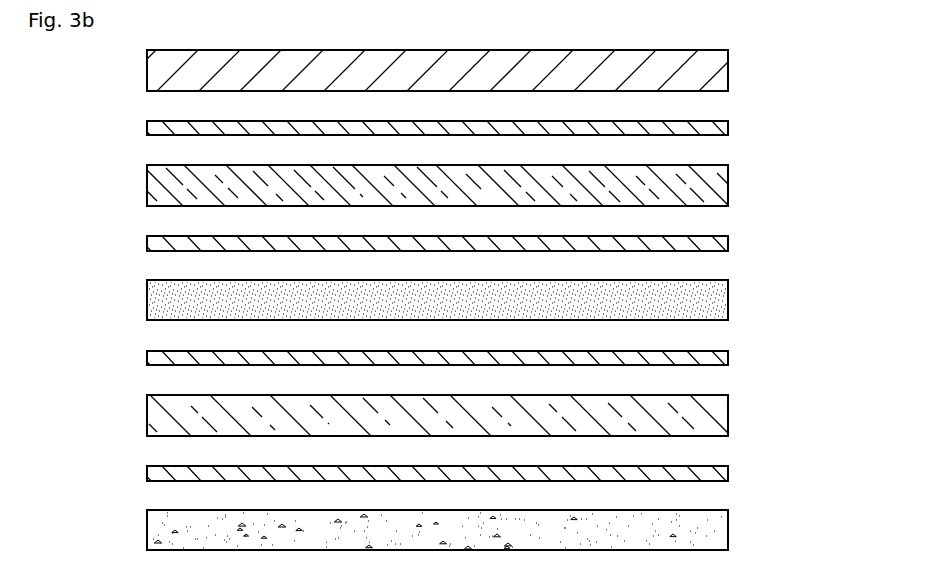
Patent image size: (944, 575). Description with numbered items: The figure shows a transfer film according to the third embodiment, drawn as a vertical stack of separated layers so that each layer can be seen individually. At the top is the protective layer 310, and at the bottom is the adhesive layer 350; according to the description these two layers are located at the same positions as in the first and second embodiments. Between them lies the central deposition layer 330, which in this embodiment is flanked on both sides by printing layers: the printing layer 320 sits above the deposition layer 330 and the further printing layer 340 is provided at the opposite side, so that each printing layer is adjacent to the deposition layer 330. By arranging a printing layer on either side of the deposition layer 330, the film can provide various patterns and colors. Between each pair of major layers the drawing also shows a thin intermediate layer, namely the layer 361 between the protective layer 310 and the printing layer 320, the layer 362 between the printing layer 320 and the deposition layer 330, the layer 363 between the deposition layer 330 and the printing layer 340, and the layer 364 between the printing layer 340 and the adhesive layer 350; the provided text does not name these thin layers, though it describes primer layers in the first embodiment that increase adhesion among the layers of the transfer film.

The protective layer 310 is at (147, 67).
The printing layer 320 is at (147, 183).
The deposition layer 330 is at (147, 297).
The printing layer 340 is at (147, 412).
The adhesive layer 350 is at (147, 527).
The first adhesive layer 361 is at (730, 127).
The second adhesive layer 362 is at (730, 243).
The third adhesive layer 363 is at (730, 357).
The fourth adhesive layer 364 is at (730, 472).